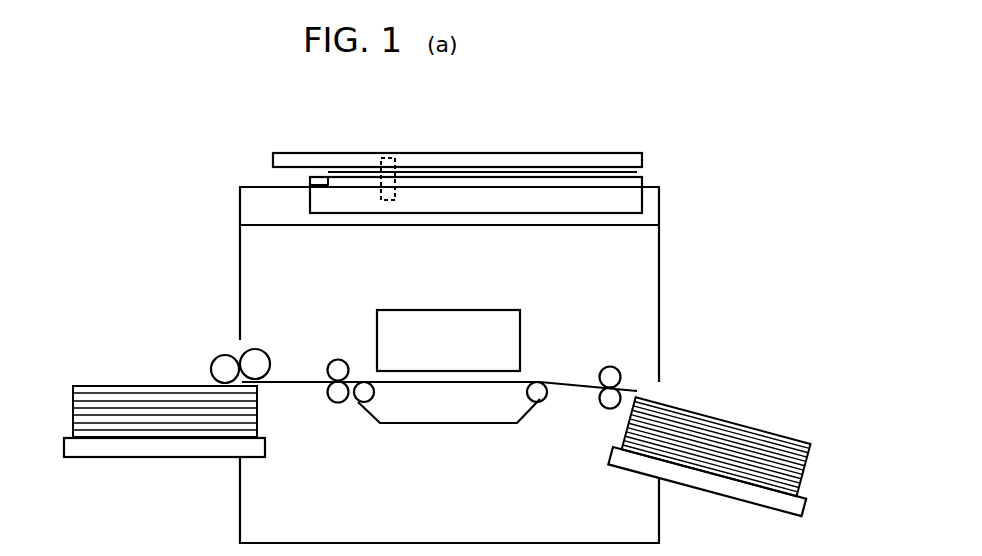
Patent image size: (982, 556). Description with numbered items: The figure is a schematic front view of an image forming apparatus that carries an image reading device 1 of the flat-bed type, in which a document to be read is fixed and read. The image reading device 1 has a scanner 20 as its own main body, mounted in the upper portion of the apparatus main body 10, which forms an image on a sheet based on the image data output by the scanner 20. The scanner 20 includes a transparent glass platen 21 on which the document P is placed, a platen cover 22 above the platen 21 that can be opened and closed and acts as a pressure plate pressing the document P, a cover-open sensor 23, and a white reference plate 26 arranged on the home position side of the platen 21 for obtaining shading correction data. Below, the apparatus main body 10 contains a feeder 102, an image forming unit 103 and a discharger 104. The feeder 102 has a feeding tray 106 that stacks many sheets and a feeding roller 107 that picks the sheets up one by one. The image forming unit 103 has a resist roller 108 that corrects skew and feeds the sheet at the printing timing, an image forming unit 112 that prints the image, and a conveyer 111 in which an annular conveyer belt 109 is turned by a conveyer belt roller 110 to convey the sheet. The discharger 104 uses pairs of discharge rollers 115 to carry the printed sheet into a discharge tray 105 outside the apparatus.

The image reading device 1 is at (253, 165).
The apparatus main body 10 is at (240, 272).
The scanner 20 is at (643, 203).
The platen 21 is at (608, 178).
The platen cover 22 is at (545, 152).
The cover-open sensor 23 is at (387, 150).
The white reference plate 26 is at (318, 177).
The document P is at (505, 170).
The feeder 102 is at (193, 353).
The image forming unit 103 is at (547, 307).
The discharger 104 is at (720, 387).
The discharge tray 105 is at (743, 492).
The feeding tray 106 is at (158, 458).
The feeding roller 107 is at (263, 346).
The resist roller 108 is at (338, 358).
The conveyer belt 109 is at (512, 425).
The conveyer belt roller 110 is at (541, 396).
The conveyer 111 is at (553, 462).
The image forming unit 112 is at (520, 337).
The discharge rollers 115 is at (612, 366).